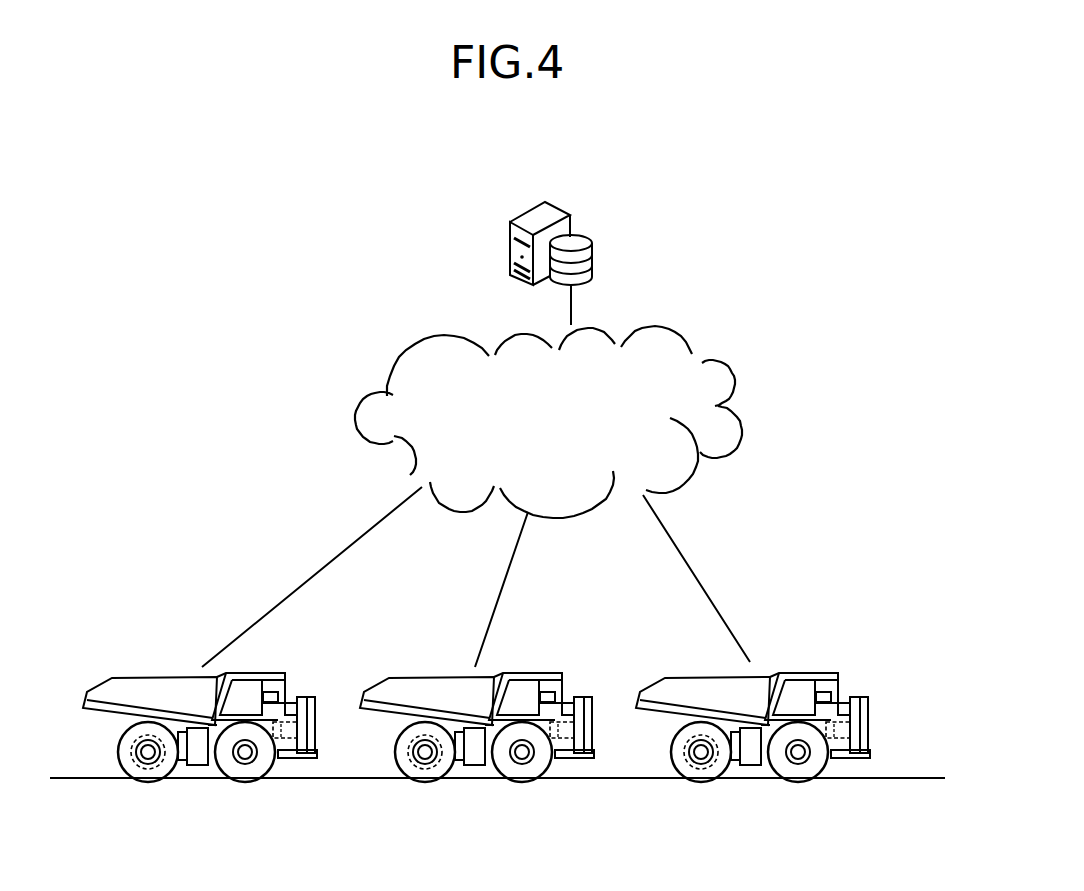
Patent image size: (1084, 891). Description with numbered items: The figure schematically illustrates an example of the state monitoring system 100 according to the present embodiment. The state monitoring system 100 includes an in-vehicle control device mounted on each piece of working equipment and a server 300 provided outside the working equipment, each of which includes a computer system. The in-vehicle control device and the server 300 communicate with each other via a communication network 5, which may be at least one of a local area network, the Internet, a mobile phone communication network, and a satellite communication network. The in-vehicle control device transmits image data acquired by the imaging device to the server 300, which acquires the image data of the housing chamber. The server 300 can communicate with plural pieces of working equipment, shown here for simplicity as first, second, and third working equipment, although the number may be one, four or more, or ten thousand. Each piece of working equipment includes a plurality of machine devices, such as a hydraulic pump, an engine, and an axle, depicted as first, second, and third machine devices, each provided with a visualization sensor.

The communication network 5 is at (684, 328).
The state monitoring system 100 is at (833, 225).
The server 300 is at (563, 196).